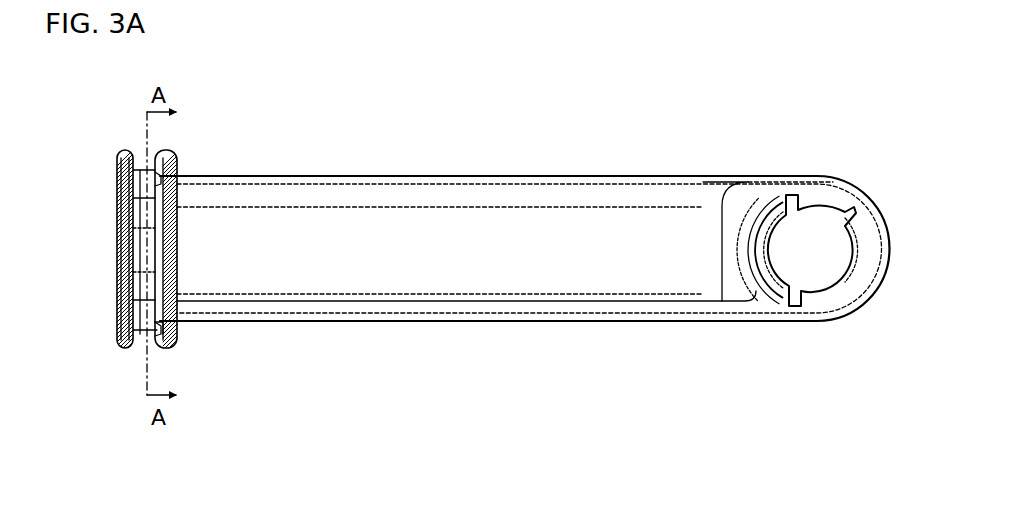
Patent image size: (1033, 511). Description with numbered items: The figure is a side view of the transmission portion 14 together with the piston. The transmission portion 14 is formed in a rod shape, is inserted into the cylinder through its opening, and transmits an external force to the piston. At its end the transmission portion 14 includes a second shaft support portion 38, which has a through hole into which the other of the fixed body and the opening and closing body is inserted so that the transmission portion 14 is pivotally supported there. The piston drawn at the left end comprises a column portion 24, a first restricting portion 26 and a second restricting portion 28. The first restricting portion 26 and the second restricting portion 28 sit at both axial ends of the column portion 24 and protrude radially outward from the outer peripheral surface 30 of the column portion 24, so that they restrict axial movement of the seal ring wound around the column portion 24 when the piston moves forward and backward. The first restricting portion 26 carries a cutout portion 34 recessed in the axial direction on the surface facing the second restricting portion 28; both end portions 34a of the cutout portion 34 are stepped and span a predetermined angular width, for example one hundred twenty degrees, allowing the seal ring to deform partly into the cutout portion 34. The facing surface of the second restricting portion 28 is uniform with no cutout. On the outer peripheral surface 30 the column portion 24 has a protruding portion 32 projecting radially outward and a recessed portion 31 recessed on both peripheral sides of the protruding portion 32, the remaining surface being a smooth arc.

The transmission portion 14 is at (602, 278).
The column portion 24 is at (140, 334).
The first restricting portion 26 is at (163, 327).
The second restricting portion 28 is at (157, 330).
The outer peripheral surface 30 is at (128, 317).
The recessed portion 31 is at (133, 208).
The protruding portion 32 is at (140, 248).
The cutout portion 34 is at (160, 243).
The end portions of the cutout portion 34a is at (158, 173).
The second shaft support portion 38 is at (805, 212).